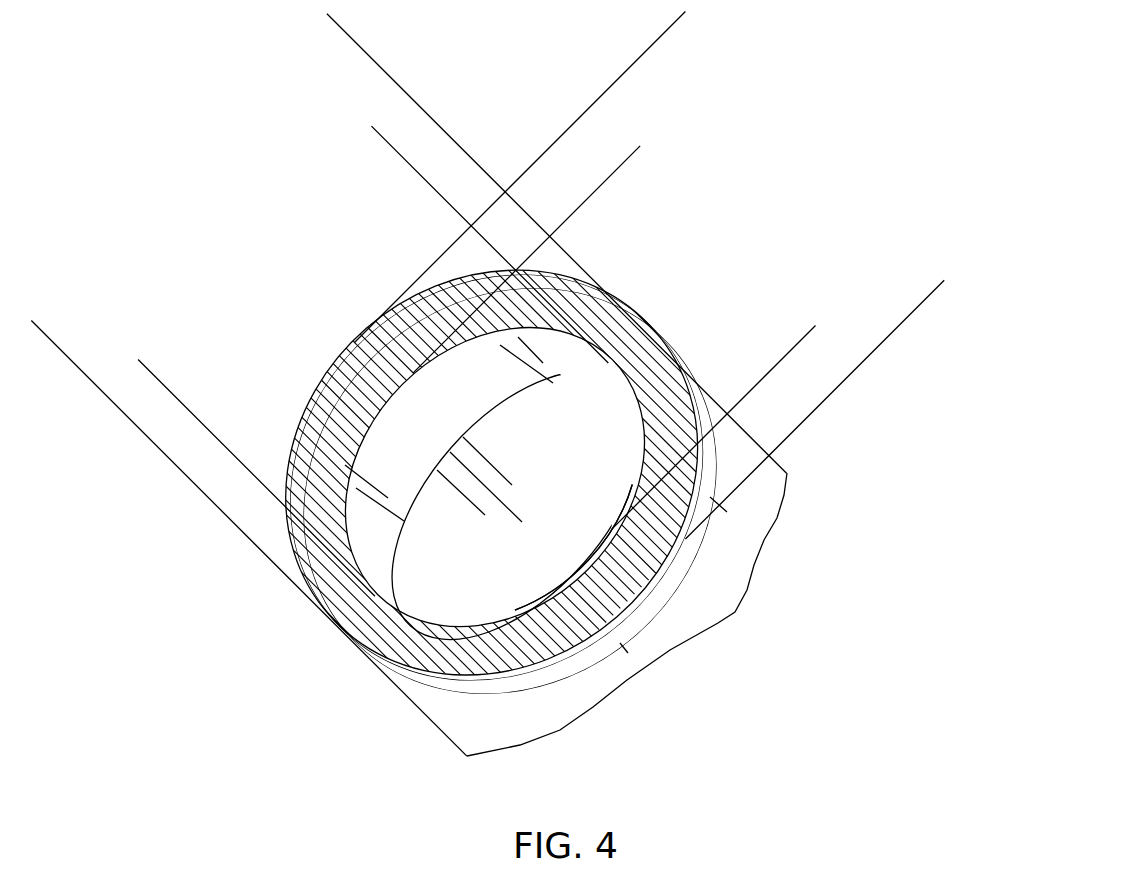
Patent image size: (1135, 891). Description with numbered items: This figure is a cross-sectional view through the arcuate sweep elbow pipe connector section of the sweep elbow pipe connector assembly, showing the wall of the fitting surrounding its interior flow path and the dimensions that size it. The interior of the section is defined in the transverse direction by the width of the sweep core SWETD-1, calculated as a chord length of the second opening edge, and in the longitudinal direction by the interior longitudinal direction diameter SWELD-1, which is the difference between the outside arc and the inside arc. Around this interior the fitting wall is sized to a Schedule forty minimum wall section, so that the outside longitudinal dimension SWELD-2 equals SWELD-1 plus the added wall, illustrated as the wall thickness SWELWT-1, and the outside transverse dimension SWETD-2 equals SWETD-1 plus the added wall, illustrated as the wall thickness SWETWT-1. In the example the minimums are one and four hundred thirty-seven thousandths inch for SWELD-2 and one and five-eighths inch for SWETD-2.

The outside transverse diameter of the sweep elbow pipe connector section SWETD-2 is at (406, 394).
The width of the sweep core SWETD-1 is at (373, 361).
The transverse wall thickness SWETWT-1 is at (375, 351).
The outside longitudinal diameter of the sweep elbow pipe connector section SWELD-2 is at (428, 187).
The interior longitudinal direction diameter SWELD-1 is at (615, 348).
The longitudinal wall thickness SWELWT-1 is at (651, 624).